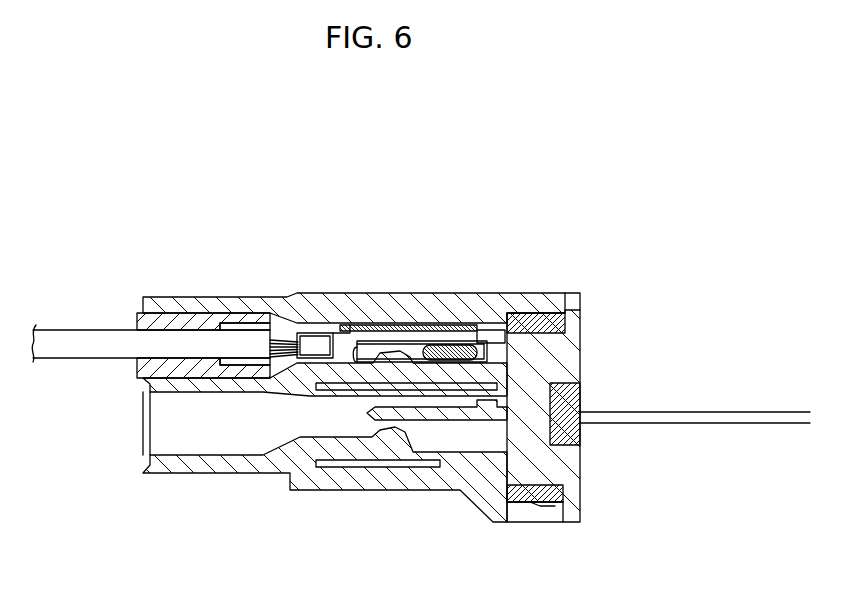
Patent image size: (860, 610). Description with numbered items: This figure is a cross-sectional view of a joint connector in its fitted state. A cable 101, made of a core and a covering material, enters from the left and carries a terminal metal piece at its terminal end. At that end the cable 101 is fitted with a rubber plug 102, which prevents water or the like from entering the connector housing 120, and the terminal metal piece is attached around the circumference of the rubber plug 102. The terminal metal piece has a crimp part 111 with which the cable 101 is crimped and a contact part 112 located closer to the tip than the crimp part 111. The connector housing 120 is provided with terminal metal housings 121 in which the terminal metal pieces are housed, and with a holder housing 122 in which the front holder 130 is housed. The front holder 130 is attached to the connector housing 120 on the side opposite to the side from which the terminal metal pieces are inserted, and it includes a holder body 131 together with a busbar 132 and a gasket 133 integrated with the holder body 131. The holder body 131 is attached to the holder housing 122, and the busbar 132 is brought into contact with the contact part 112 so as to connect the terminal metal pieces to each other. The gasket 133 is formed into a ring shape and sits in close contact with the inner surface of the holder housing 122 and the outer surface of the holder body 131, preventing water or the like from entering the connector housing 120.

The cable 101 is at (80, 338).
The rubber plug 102 is at (173, 320).
The crimp part 111 is at (318, 338).
The contact part 112 is at (364, 340).
The connector housing 120 is at (505, 292).
The terminal metal housing 121 is at (284, 327).
The holder housing 122 is at (548, 503).
The front holder 130 is at (578, 292).
The holder body 131 is at (545, 355).
The busbar 132 is at (484, 335).
The gasket 133 is at (551, 312).